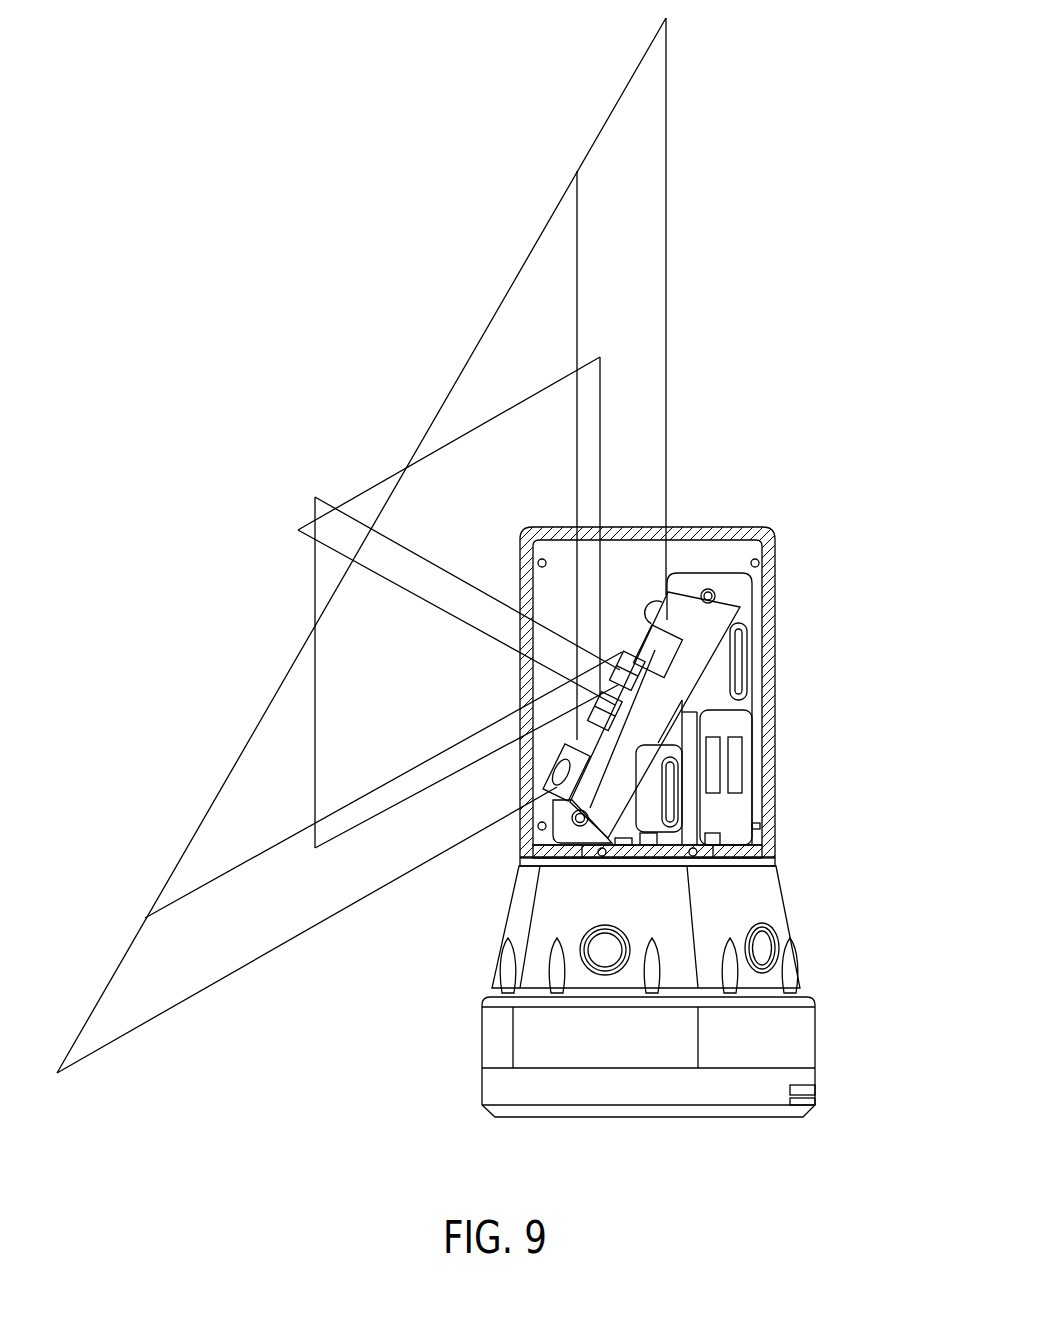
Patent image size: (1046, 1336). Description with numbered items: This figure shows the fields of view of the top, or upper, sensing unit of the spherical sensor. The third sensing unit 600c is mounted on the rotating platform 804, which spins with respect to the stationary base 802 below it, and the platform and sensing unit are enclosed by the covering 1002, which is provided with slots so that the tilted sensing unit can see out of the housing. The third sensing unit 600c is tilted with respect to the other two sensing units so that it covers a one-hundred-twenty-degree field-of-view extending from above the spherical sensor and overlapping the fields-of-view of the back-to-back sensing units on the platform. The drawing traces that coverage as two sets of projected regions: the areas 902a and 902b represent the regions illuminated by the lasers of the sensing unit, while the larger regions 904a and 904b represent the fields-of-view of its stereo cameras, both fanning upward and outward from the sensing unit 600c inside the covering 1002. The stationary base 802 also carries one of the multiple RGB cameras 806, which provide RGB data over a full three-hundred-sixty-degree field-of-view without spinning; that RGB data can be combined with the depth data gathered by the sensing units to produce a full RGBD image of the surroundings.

The laser illuminated area 902a is at (345, 645).
The laser illuminated area 902b is at (462, 470).
The stereo camera field-of-view 904a is at (240, 935).
The stereo camera field-of-view 904b is at (645, 403).
The covering 1002 is at (742, 552).
The third sensing unit 600c is at (695, 648).
The rotating platform 804 is at (757, 853).
The stationary base 802 is at (772, 907).
The RGB camera 806 is at (603, 953).